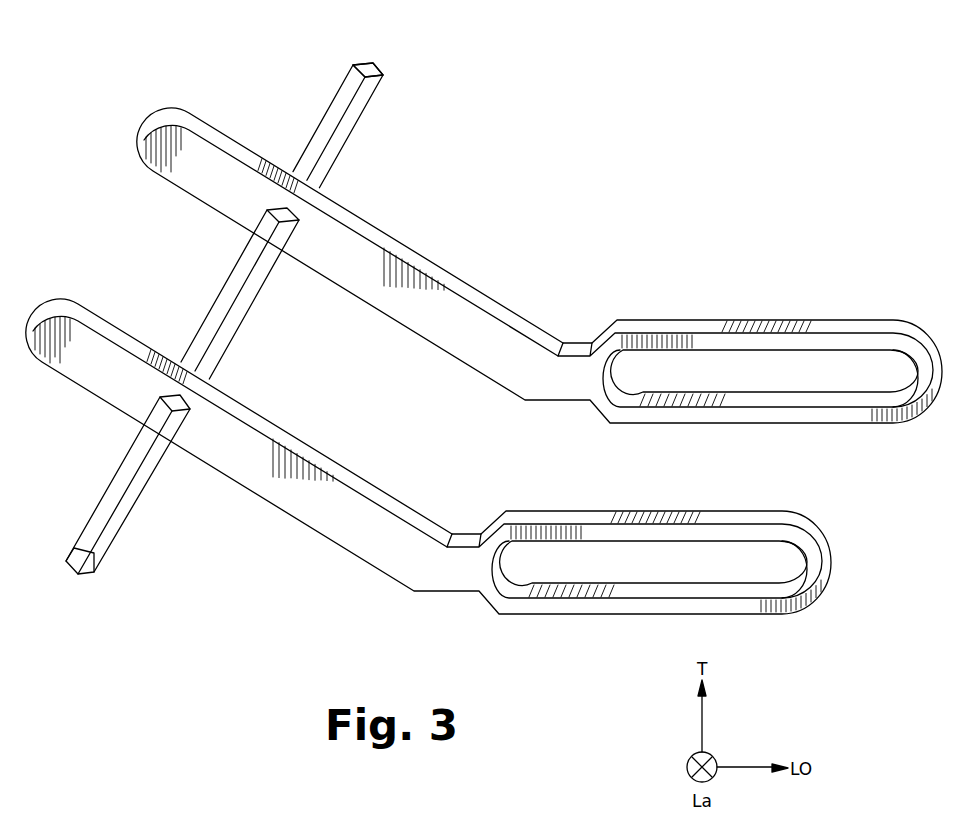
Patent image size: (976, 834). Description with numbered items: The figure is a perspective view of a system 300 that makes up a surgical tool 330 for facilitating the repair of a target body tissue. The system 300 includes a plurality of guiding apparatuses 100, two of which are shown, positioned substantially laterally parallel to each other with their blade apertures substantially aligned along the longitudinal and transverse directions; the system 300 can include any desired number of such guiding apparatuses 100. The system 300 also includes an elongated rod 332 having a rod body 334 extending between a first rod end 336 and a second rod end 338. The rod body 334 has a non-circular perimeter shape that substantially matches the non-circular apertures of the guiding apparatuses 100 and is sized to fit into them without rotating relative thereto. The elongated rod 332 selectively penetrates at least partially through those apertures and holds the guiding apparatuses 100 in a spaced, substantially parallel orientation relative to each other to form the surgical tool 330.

The guiding apparatus 100 is at (185, 98).
The system 300 is at (484, 342).
The surgical tool 330 is at (484, 342).
The elongated rod 332 is at (358, 140).
The rod body 334 is at (256, 308).
The first rod end 336 is at (86, 580).
The second rod end 338 is at (356, 66).